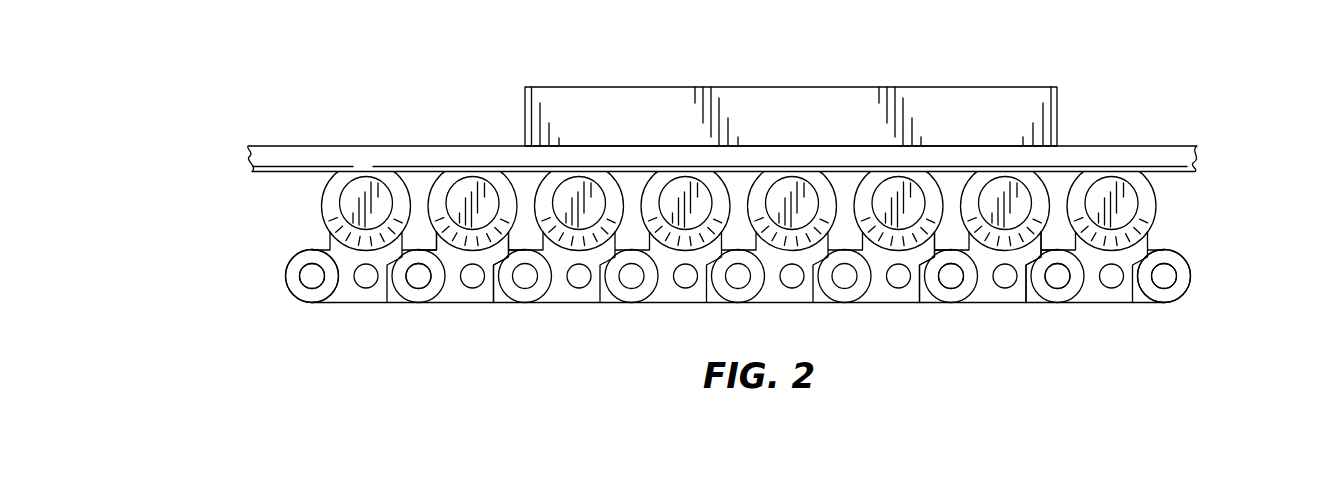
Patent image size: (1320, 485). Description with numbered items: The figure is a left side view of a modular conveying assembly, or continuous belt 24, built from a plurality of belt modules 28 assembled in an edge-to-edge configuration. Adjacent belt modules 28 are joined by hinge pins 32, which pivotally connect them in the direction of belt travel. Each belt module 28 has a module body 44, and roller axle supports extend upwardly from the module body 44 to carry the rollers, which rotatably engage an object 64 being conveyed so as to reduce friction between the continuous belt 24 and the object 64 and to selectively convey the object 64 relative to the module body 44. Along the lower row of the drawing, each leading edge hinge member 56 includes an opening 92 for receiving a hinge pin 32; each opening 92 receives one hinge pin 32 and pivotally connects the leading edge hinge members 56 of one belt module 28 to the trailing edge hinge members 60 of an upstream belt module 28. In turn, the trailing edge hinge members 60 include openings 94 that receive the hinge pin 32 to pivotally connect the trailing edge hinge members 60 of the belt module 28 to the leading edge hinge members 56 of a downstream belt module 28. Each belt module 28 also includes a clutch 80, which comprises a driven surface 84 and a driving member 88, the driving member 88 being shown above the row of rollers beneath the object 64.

The continuous belt 24 is at (720, 268).
The belt module 28 is at (927, 290).
The hinge pin 32 is at (416, 277).
The module body 44 is at (480, 253).
The leading edge hinge member 56 is at (1185, 275).
The trailing edge hinge member 60 is at (297, 284).
The object 64 is at (982, 105).
The clutch 80 is at (775, 110).
The driven surface 84 is at (1146, 203).
The driving member 88 is at (1170, 151).
The opening 92 is at (1166, 278).
The opening 94 is at (313, 273).